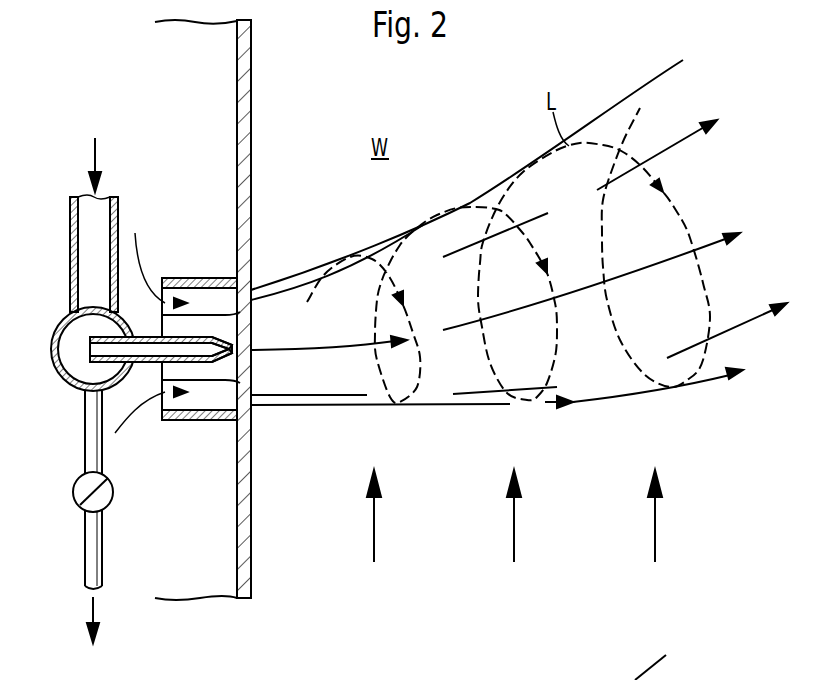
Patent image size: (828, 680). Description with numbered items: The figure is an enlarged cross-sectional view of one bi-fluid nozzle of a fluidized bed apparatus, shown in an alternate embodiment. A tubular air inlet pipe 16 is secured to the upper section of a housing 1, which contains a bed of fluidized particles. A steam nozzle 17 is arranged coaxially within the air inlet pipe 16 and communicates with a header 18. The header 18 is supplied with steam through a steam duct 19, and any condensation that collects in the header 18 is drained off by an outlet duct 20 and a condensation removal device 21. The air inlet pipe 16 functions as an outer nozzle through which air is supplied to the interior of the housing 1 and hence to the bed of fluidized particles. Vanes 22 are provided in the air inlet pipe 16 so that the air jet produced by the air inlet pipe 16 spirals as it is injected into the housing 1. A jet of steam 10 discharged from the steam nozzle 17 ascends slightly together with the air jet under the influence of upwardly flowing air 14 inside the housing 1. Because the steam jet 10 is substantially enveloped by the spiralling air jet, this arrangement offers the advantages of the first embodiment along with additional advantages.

The housing 1 is at (251, 136).
The jet of steam 10 is at (591, 292).
The upwardly flowing air 14 is at (374, 517).
The air inlet pipe 16 is at (182, 278).
The steam nozzle 17 is at (203, 363).
The header 18 is at (67, 322).
The steam duct 19 is at (70, 229).
The outlet duct 20 is at (85, 424).
The condensation removal device 21 is at (112, 500).
The vanes 22 is at (218, 316).